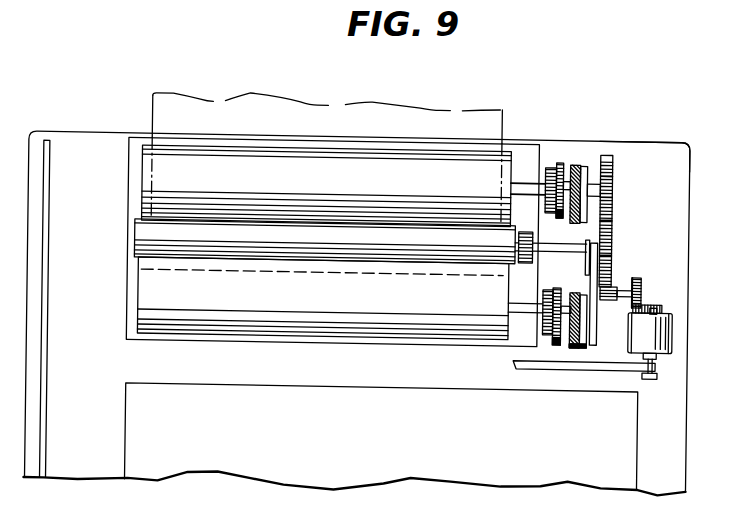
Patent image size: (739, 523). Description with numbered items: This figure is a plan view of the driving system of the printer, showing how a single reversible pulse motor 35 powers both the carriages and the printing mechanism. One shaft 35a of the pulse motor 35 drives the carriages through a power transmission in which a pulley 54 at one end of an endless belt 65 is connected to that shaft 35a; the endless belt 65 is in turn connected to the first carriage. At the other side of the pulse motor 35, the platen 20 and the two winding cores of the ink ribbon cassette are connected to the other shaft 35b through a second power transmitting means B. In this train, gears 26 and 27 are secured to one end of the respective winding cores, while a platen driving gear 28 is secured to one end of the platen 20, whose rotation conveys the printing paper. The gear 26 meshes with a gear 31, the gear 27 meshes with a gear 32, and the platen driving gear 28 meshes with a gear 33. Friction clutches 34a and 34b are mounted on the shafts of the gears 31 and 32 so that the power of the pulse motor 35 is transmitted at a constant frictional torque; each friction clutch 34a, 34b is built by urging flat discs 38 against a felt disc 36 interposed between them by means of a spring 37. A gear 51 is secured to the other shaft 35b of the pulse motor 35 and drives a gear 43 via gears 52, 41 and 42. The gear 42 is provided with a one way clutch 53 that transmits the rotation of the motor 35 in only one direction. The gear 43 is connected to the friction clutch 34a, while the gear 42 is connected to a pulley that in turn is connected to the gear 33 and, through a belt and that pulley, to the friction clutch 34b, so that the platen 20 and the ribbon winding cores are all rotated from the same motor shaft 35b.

The platen 20 is at (509, 216).
The gear 26 is at (548, 158).
The gear 27 is at (546, 317).
The platen driving gear 28 is at (518, 232).
The gear 31 is at (558, 155).
The gear 32 is at (550, 336).
The gear 33 is at (534, 233).
The friction clutch 34a is at (582, 155).
The friction clutch 34b is at (586, 337).
The reversible pulse motor 35 is at (675, 325).
The shaft 35a is at (660, 346).
The shaft 35b is at (662, 301).
The felt disc 36 is at (613, 152).
The spring 37 is at (569, 166).
The flat discs 38 is at (614, 174).
The gear 41 is at (614, 276).
The gear 42 is at (610, 232).
The gear 43 is at (630, 132).
The gear 51 is at (662, 297).
The gear 52 is at (645, 280).
The one way clutch 53 is at (614, 252).
The pulley 54 is at (658, 368).
The endless belt 65 is at (553, 354).
The second power transmitting means B is at (650, 269).